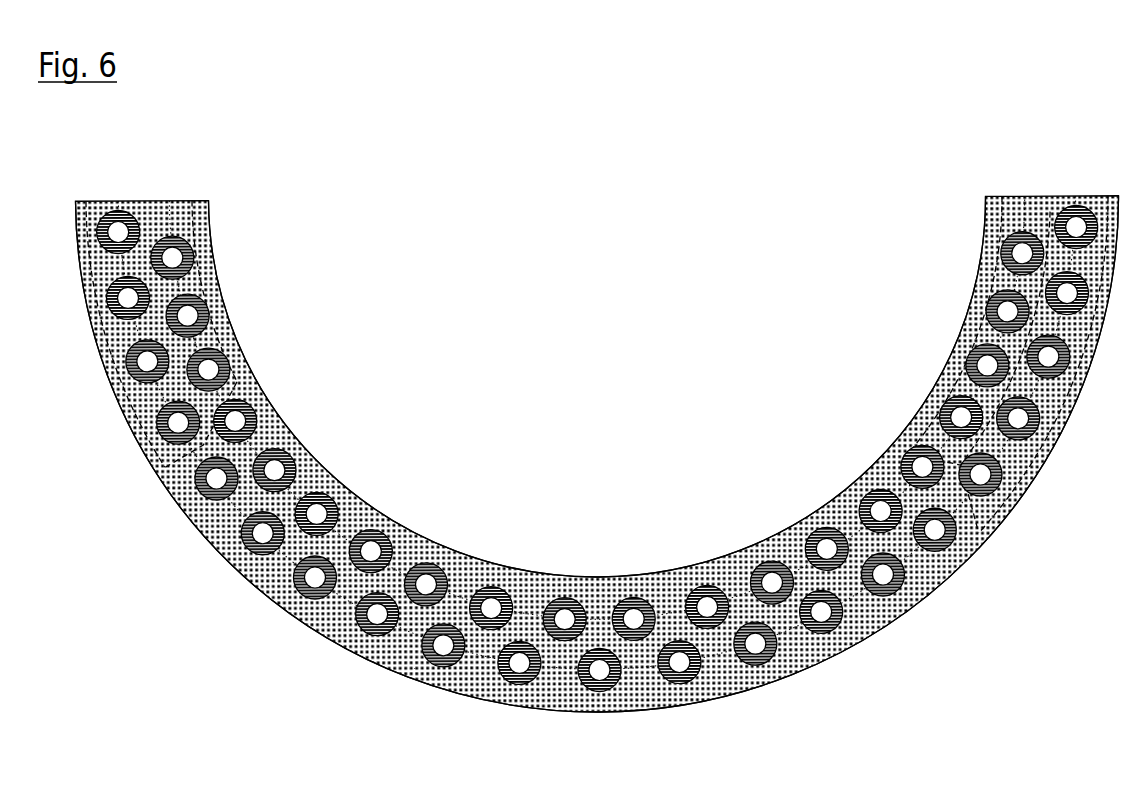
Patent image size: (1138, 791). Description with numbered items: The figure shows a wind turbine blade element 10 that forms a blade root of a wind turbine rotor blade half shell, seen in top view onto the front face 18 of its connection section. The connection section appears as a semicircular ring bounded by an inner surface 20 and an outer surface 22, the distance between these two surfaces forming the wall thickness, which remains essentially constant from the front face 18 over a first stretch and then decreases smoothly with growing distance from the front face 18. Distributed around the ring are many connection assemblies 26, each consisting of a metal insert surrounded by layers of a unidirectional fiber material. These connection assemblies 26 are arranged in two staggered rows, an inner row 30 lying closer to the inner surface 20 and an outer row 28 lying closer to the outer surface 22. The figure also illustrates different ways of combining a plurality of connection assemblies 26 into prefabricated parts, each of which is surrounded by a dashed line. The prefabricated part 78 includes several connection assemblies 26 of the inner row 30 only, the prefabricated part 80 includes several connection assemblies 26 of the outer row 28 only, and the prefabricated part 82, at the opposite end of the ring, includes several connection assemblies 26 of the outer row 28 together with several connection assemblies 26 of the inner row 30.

The wind turbine blade element 10 is at (603, 166).
The front face 18 is at (545, 687).
The inner surface 20 is at (447, 555).
The outer surface 22 is at (438, 688).
The connection assembly 26 is at (767, 563).
The outer row 28 is at (1080, 196).
The inner row 30 is at (1027, 220).
The prefabricated part 78 is at (965, 352).
The prefabricated part 80 is at (1027, 476).
The prefabricated part 82 is at (208, 291).